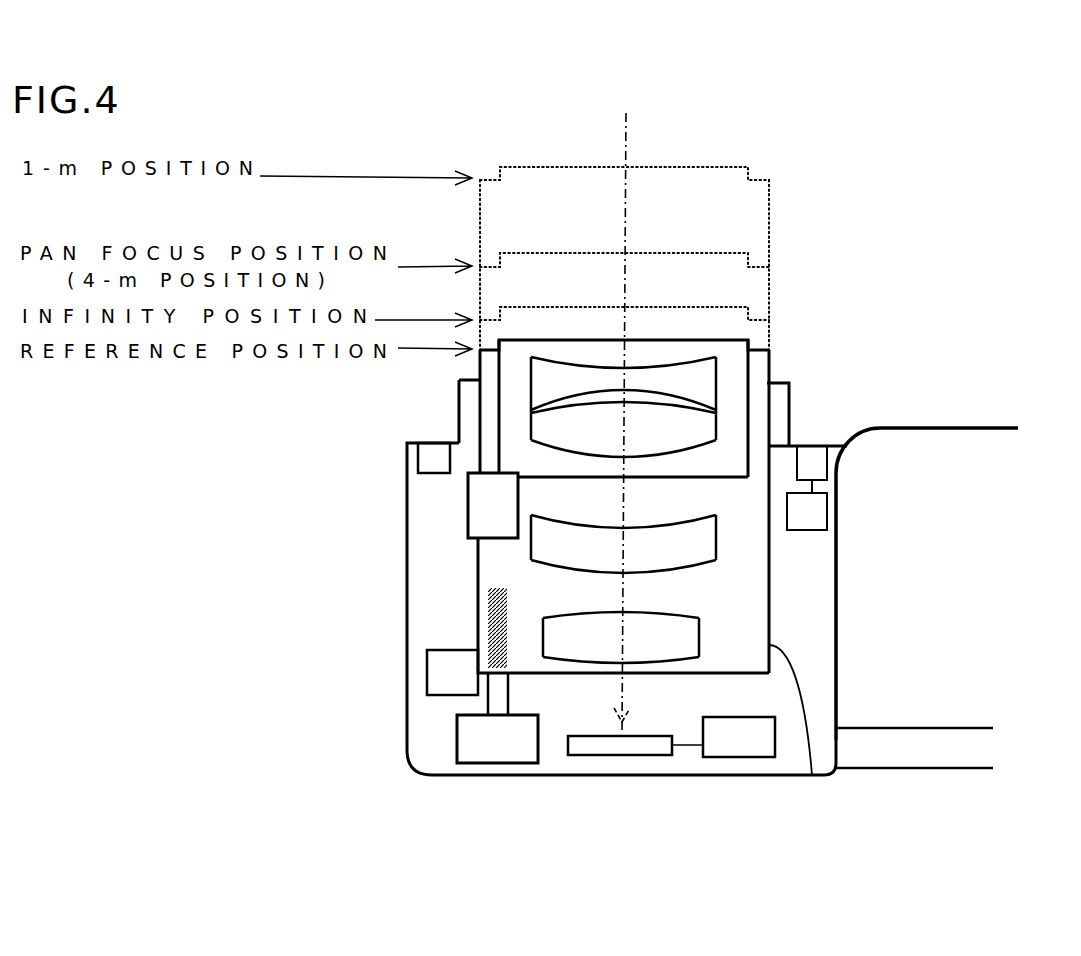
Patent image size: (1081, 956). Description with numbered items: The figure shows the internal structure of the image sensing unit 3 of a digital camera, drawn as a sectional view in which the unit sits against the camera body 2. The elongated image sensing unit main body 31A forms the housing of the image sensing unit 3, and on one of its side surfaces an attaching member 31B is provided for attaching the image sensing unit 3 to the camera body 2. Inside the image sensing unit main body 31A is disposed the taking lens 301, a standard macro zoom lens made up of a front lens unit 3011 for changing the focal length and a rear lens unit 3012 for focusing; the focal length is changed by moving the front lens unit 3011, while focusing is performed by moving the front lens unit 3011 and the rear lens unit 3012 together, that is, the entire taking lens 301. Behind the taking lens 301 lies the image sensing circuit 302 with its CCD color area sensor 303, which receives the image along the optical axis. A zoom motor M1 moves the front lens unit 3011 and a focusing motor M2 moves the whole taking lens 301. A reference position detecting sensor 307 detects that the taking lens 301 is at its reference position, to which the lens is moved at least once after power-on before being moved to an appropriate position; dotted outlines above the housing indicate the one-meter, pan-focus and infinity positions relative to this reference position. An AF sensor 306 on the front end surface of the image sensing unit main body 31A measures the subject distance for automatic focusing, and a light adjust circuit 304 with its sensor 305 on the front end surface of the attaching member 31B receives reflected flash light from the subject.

The camera body 2 is at (1002, 831).
The image sensing unit 3 is at (626, 493).
The image sensing unit main body 31A is at (420, 565).
The attaching member 31B is at (830, 773).
The taking lens 301 is at (814, 775).
The image sensing circuit 302 is at (740, 738).
The CCD color area sensor 303 is at (617, 755).
The light adjust circuit 304 is at (807, 517).
The sensor 305 is at (812, 455).
The AF sensor 306 is at (423, 457).
The reference position detecting sensor 307 is at (440, 667).
The front lens unit 3011 is at (742, 476).
The rear lens unit 3012 is at (743, 600).
The zoom motor M1 is at (485, 498).
The focusing motor M2 is at (478, 752).